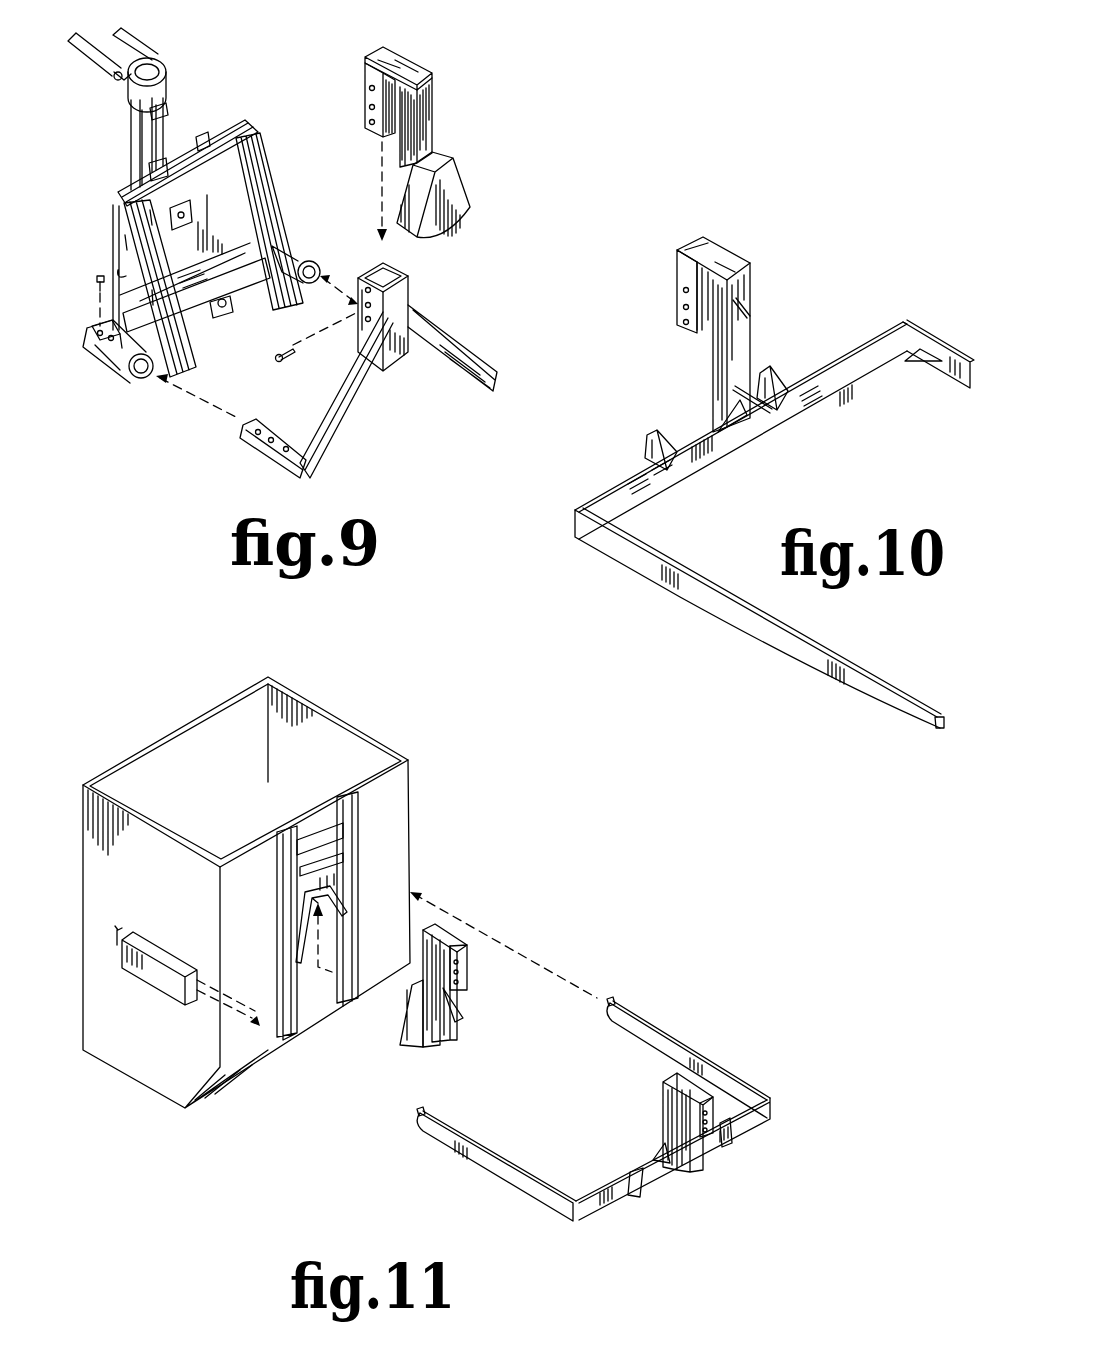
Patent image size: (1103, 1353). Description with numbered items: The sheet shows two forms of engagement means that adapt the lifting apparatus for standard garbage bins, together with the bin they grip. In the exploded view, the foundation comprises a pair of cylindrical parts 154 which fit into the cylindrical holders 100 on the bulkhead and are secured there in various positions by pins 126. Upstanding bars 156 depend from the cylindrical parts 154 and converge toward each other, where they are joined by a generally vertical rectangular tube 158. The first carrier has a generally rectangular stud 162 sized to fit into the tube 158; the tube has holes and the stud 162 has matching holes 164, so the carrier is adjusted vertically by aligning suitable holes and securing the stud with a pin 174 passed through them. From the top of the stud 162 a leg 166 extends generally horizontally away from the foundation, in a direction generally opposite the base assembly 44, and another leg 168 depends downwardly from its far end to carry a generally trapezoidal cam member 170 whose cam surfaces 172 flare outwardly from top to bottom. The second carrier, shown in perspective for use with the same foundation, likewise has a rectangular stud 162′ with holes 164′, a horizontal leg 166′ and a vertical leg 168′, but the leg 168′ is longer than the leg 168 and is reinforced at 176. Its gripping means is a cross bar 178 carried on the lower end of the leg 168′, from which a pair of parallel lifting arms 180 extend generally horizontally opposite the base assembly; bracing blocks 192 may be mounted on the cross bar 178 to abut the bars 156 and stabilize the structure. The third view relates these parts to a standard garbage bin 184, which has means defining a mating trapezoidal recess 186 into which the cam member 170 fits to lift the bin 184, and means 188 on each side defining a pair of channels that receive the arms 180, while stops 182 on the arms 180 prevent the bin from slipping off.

In FIG. 9, the base assembly 44 is at (186, 77).
In FIG. 9, the cylindrical holder 100 is at (306, 257).
In FIG. 9, the pin 126 is at (100, 274).
In FIG. 9, the cylindrical part 154 is at (258, 462).
In FIG. 9, the upstanding bar 156 is at (330, 428).
In FIG. 9, the rectangular tube 158 is at (400, 366).
In FIG. 9, the rectangular stud 162 is at (364, 70).
In FIG. 11, the rectangular stud 162 is at (470, 972).
In FIG. 9, the holes 164 is at (370, 109).
In FIG. 9, the leg 166 is at (418, 70).
In FIG. 11, the leg 166 is at (450, 928).
In FIG. 9, the leg 168 is at (436, 114).
In FIG. 11, the leg 168 is at (450, 1030).
In FIG. 9, the cam member 170 is at (452, 222).
In FIG. 9, the cam surfaces 172 is at (470, 180).
In FIG. 11, the cam surfaces 172 is at (403, 1038).
In FIG. 9, the pin 174 is at (276, 362).
In FIG. 10, the rectangular stud 162′ is at (676, 272).
In FIG. 10, the holes 164′ is at (680, 309).
In FIG. 10, the horizontal leg 166′ is at (715, 255).
In FIG. 10, the vertical leg 168′ is at (752, 282).
In FIG. 10, the reinforcement 176 is at (745, 330).
In FIG. 10, the cross bar 178 is at (862, 335).
In FIG. 11, the cross bar 178 is at (595, 1205).
In FIG. 10, the lifting arm 180 is at (760, 645).
In FIG. 11, the lifting arm 180 is at (662, 1035).
In FIG. 10, the stop 182 is at (938, 714).
In FIG. 11, the stop 182 is at (612, 1001).
In FIG. 10, the bracing block 192 is at (775, 372).
In FIG. 11, the garbage bin 184 is at (348, 735).
In FIG. 11, the trapezoidal recess 186 is at (340, 905).
In FIG. 11, the channel-defining means 188 is at (160, 988).